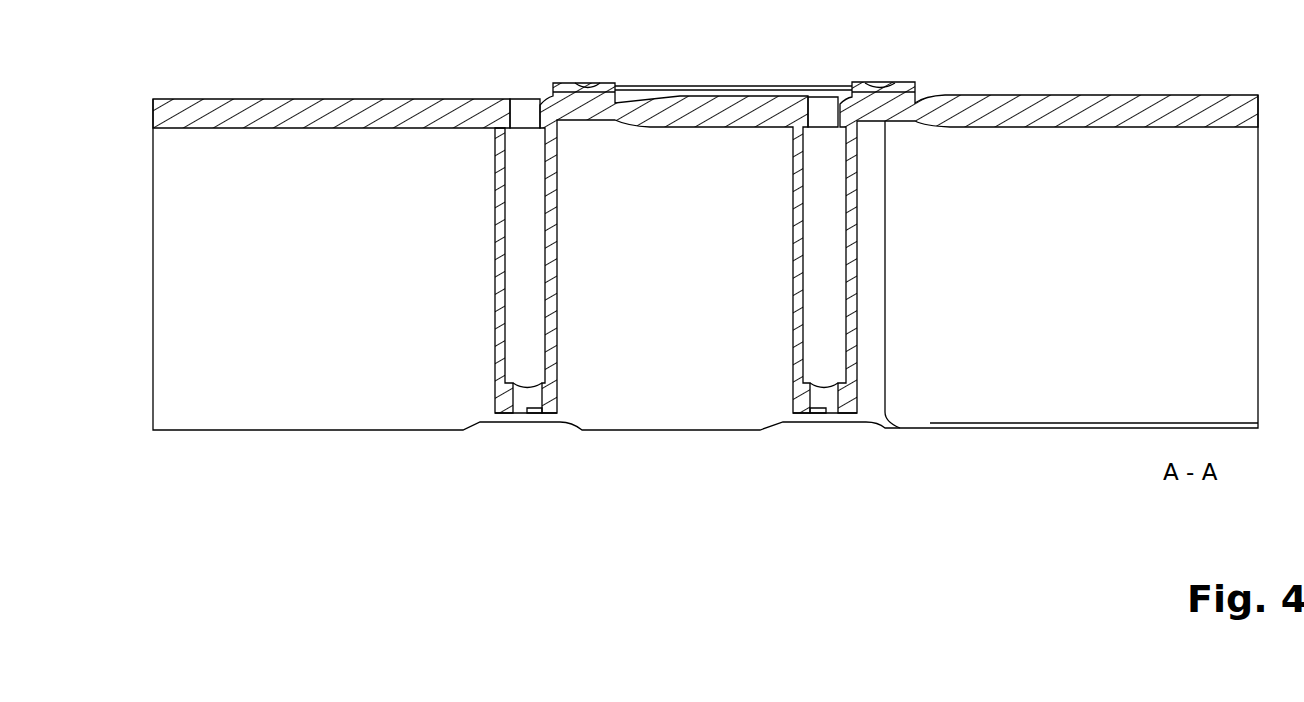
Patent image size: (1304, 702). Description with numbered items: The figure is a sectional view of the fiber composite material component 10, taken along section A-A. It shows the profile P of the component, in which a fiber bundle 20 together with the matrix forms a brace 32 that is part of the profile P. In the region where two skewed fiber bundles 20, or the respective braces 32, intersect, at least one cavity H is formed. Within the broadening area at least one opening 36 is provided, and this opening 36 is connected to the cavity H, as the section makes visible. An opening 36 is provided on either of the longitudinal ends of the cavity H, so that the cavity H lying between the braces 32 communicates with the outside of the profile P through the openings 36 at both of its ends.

The fiber composite material component 10 is at (1058, 460).
The fiber bundle 20 is at (1080, 117).
The brace 32 is at (360, 120).
The opening 36 is at (525, 112).
The cavity H is at (530, 237).
The profile P is at (397, 462).